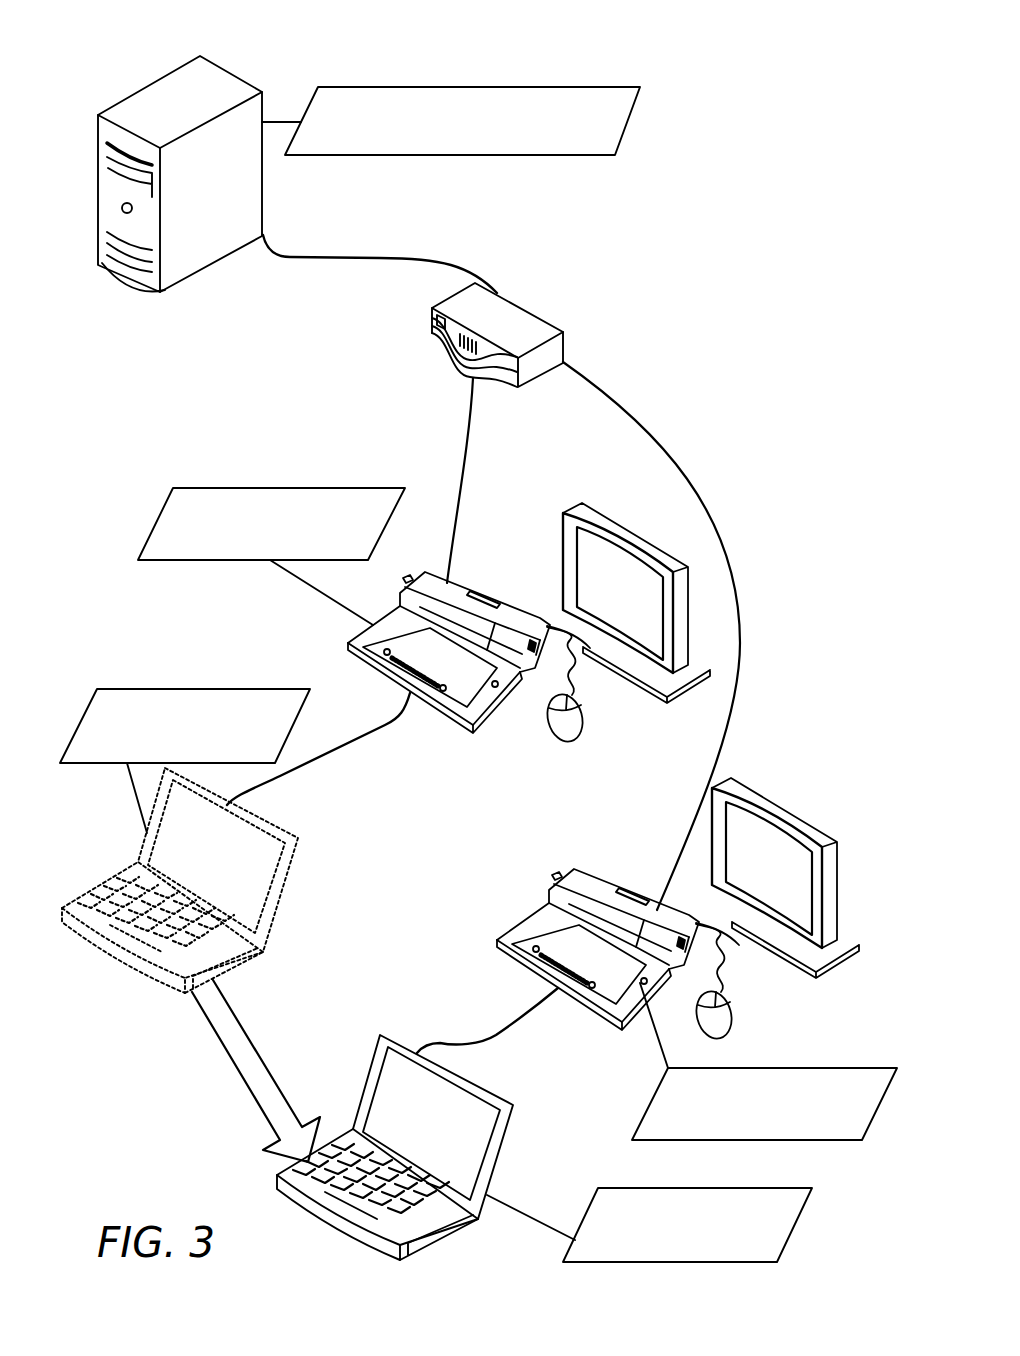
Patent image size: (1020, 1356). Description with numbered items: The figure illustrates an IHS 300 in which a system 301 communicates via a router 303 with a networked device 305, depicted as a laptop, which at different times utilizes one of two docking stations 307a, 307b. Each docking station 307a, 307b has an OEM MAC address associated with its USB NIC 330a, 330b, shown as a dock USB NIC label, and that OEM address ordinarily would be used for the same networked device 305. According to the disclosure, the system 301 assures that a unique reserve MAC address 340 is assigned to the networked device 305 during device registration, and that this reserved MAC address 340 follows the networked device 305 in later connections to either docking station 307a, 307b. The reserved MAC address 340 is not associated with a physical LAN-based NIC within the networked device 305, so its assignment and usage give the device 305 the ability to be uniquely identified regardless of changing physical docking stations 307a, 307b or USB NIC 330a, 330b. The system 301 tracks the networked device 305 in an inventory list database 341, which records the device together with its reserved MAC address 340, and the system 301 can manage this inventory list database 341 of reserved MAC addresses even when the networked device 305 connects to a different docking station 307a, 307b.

The IHS 300 is at (727, 71).
The system 301 is at (200, 272).
The router 303 is at (542, 318).
The networked device 305 is at (250, 827).
The docking station 307a is at (478, 592).
The docking station 307b is at (627, 890).
The USB NIC 330a is at (170, 488).
The USB NIC 330b is at (802, 1066).
The reserved MAC address 340 is at (100, 690).
The inventory list database 341 is at (590, 157).